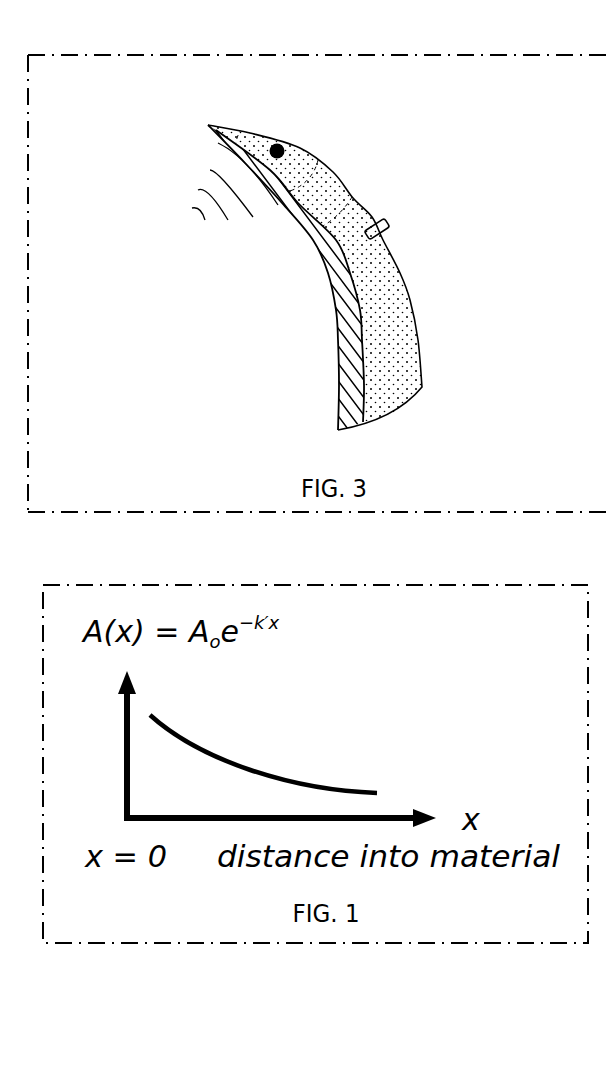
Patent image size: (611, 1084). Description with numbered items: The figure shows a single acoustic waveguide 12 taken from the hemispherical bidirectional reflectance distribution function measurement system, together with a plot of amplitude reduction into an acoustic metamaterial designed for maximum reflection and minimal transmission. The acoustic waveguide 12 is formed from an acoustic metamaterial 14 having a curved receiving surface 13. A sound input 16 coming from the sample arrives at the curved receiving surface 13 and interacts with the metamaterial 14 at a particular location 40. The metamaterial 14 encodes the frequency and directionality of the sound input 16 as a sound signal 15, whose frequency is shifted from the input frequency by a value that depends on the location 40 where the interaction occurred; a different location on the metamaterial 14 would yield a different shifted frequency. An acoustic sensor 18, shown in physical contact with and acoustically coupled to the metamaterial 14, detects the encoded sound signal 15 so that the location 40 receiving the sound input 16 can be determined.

The acoustic waveguide 12 is at (69, 108).
The curved receiving surface 13 is at (337, 337).
The acoustic metamaterial 14 is at (366, 307).
The sound signal 15 is at (332, 178).
The sound input 16 is at (204, 222).
The acoustic sensor 18 is at (378, 220).
The location 40 is at (280, 143).